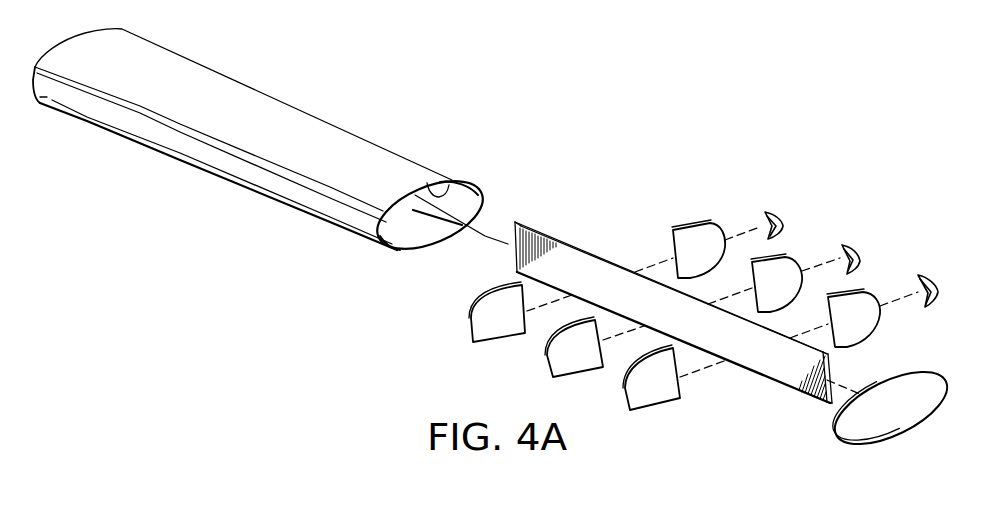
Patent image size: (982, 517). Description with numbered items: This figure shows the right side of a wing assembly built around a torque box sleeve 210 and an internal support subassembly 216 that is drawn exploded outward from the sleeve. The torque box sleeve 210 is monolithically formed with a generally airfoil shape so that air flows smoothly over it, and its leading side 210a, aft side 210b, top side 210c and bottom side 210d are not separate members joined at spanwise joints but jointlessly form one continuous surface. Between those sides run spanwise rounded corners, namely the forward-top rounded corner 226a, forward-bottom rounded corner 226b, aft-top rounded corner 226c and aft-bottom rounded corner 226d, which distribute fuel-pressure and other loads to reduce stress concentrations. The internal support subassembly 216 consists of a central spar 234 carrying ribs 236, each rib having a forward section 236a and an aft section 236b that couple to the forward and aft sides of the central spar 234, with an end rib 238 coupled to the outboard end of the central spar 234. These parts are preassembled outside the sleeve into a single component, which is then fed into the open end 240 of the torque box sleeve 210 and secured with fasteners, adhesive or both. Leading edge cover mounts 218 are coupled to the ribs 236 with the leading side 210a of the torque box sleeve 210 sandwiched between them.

The torque box sleeve 210 is at (302, 183).
The leading side 210a is at (489, 197).
The aft side 210b is at (367, 233).
The top side 210c is at (370, 149).
The bottom side 210d is at (432, 250).
The forward-top rounded corner 226a is at (478, 181).
The forward-bottom rounded corner 226b is at (482, 233).
The aft-top rounded corner 226c is at (340, 211).
The aft-bottom rounded corner 226d is at (385, 250).
The open end 240 is at (436, 187).
The internal support subassembly 216 is at (673, 303).
The central spar 234 is at (778, 373).
The ribs 236 is at (674, 289).
The forward section 236a is at (703, 223).
The aft section 236b is at (494, 346).
The leading edge cover mounts 218 is at (853, 246).
The end rib 238 is at (883, 429).